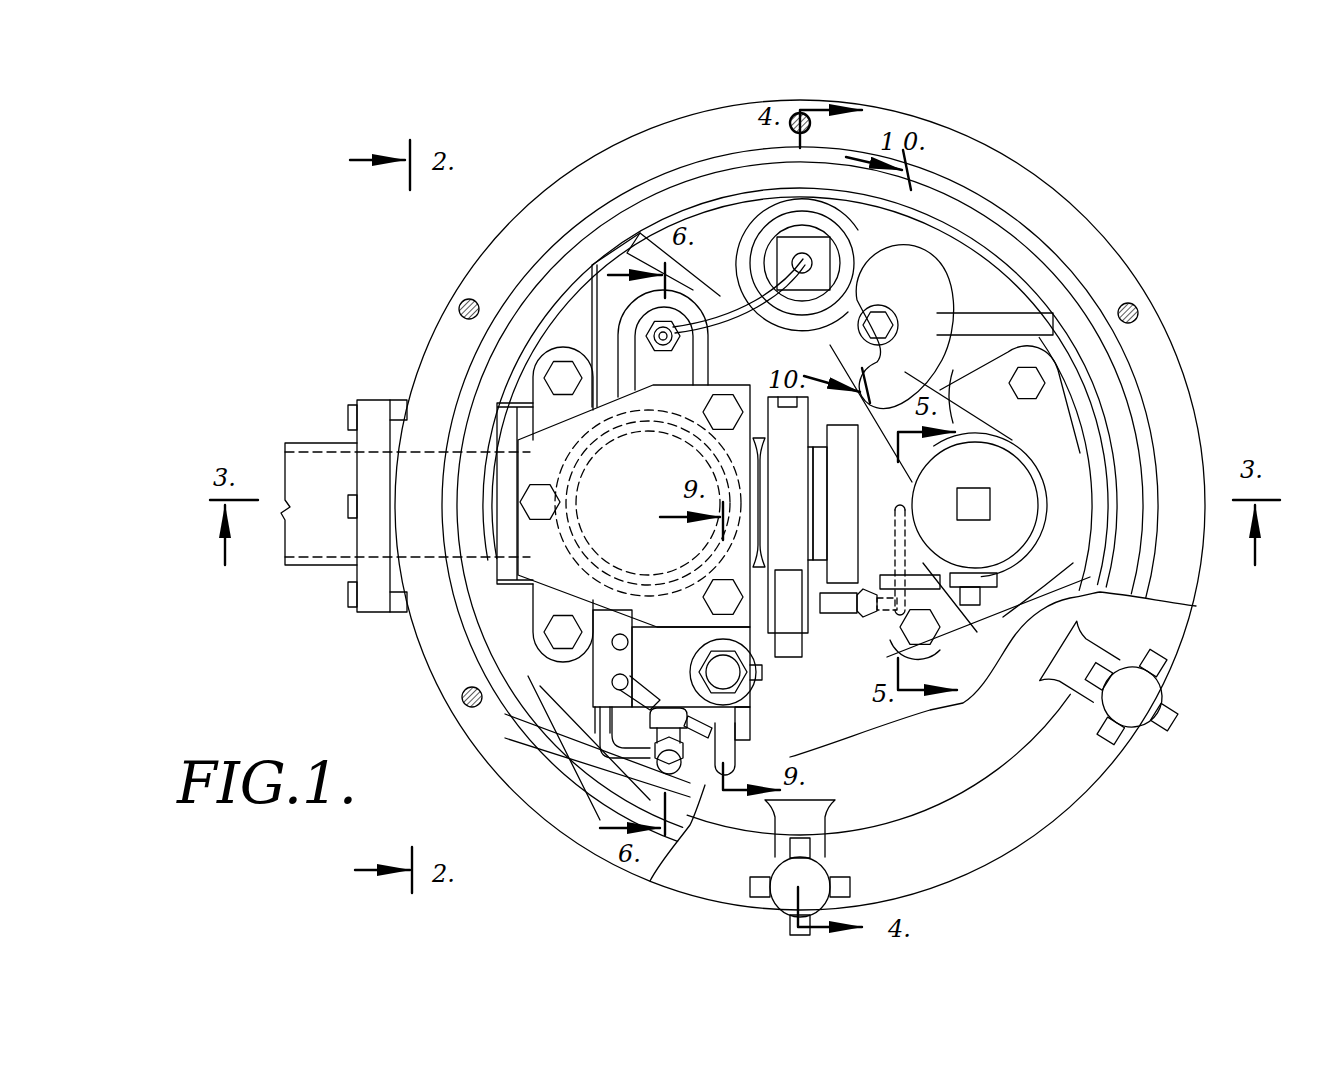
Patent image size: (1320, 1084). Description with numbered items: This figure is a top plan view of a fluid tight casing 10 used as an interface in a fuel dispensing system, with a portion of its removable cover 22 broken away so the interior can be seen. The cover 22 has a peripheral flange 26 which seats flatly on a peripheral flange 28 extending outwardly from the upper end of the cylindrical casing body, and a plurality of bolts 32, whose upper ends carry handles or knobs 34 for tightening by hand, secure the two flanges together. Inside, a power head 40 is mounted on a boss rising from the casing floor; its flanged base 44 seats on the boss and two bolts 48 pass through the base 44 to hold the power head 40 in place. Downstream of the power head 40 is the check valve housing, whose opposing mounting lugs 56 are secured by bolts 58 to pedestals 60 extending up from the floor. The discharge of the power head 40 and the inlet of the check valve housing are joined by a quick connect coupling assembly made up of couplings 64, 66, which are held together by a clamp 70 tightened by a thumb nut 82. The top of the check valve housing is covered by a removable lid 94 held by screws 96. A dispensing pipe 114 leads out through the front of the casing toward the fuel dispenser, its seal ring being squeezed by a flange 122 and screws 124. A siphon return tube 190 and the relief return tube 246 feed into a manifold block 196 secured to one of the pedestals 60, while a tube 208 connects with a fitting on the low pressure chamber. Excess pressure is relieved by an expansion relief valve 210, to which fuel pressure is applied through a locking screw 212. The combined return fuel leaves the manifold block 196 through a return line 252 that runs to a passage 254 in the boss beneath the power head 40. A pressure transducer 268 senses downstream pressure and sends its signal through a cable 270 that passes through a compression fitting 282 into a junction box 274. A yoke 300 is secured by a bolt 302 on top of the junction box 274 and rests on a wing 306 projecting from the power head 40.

The fluid tight casing 10 is at (1200, 215).
The removable cover 22 is at (1035, 795).
The peripheral flange of cover 26 is at (1180, 615).
The peripheral flange of body 28 is at (1025, 190).
The bolts 32 is at (467, 300).
The handles or knobs 34 is at (787, 887).
The power head 40 is at (960, 610).
The flanged base 44 is at (1100, 420).
The bolts 48 is at (1015, 385).
The mounting lugs 56 is at (540, 385).
The bolts 58 is at (565, 370).
The pedestals 60 is at (517, 395).
The coupling 64 is at (832, 487).
The coupling 66 is at (760, 500).
The clamp 70 is at (800, 432).
The thumb nut 82 is at (790, 630).
The removable lid 94 is at (650, 405).
The screws 96 is at (540, 497).
The dispensing pipe 114 is at (322, 448).
The flange 122 is at (382, 400).
The screws 124 is at (350, 408).
The tube 190 is at (628, 642).
The manifold block 196 is at (540, 702).
The tube 208 is at (770, 745).
The expansion relief valve 210 is at (760, 700).
The locking screw 212 is at (650, 778).
The tube 246 is at (628, 680).
The return line 252 is at (836, 613).
The passage 254 is at (866, 620).
The pressure transducer 268 is at (682, 345).
The cable 270 is at (725, 288).
The junction box 274 is at (748, 252).
The compression fitting 282 is at (812, 257).
The yoke 300 is at (942, 300).
The bolt 302 is at (885, 318).
The wing 306 is at (928, 382).